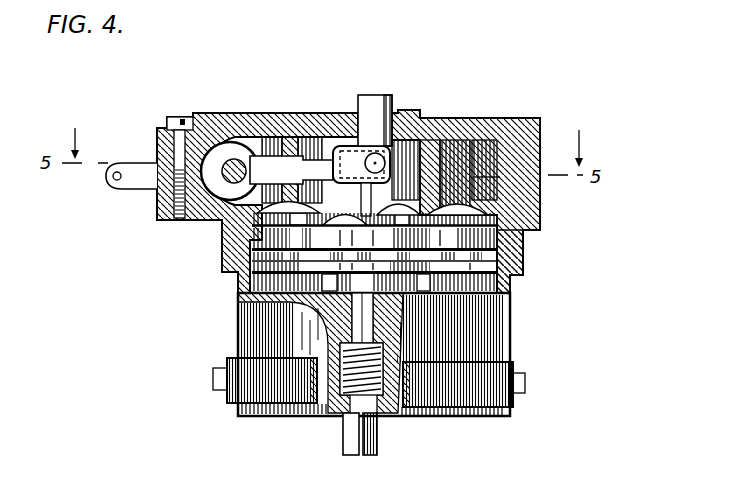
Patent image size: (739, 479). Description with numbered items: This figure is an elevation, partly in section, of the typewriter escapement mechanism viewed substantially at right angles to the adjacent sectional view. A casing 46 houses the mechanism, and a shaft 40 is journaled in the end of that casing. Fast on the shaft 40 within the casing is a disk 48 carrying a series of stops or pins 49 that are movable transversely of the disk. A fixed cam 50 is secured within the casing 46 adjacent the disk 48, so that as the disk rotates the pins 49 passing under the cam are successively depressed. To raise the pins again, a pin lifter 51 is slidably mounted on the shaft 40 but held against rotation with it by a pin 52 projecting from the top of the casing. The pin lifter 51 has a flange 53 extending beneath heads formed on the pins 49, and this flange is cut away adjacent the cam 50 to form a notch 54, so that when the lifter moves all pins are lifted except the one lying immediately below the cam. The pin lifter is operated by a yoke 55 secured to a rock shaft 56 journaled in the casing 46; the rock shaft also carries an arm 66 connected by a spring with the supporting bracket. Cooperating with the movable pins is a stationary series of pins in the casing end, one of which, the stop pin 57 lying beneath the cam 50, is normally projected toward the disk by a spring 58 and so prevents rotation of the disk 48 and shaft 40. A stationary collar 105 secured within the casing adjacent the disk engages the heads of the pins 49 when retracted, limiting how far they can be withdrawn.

The shaft 40 is at (393, 101).
The casing 46 is at (495, 335).
The disk 48 is at (262, 232).
The stops or pins 49 is at (521, 231).
The fixed cam 50 is at (313, 150).
The pin lifter 51 is at (426, 215).
The pin 52 is at (417, 128).
The flange 53 is at (476, 182).
The notch 54 is at (310, 233).
The yoke 55 is at (263, 160).
The rock shaft 56 is at (216, 114).
The stop pin 57 is at (378, 431).
The spring 58 is at (337, 416).
The arm 66 is at (138, 185).
The stationary collar 105 is at (285, 140).